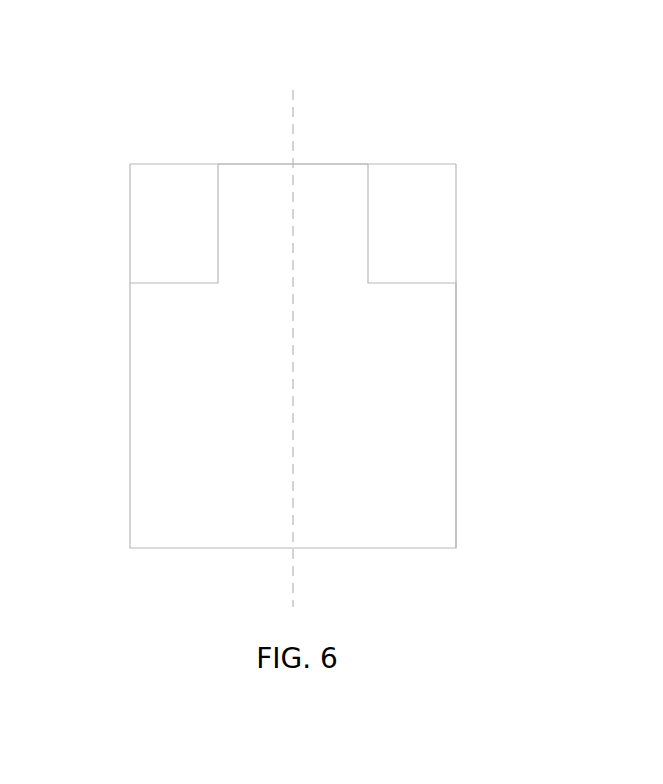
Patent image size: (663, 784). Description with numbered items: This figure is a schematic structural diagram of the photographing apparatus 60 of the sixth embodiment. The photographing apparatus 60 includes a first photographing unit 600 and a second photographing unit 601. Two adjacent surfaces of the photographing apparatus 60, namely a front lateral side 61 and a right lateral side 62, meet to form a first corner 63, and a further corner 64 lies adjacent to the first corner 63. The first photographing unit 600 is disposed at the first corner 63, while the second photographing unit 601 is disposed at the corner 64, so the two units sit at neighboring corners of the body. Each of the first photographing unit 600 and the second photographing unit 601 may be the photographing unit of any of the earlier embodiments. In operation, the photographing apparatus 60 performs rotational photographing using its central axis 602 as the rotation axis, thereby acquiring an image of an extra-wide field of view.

The photographing apparatus 60 is at (289, 31).
The front lateral side 61 is at (380, 163).
The right lateral side 62 is at (456, 253).
The first corner 63 is at (456, 164).
The corner 64 is at (130, 163).
The first photographing unit 600 is at (388, 252).
The second photographing unit 601 is at (142, 242).
The central axis 602 is at (293, 134).